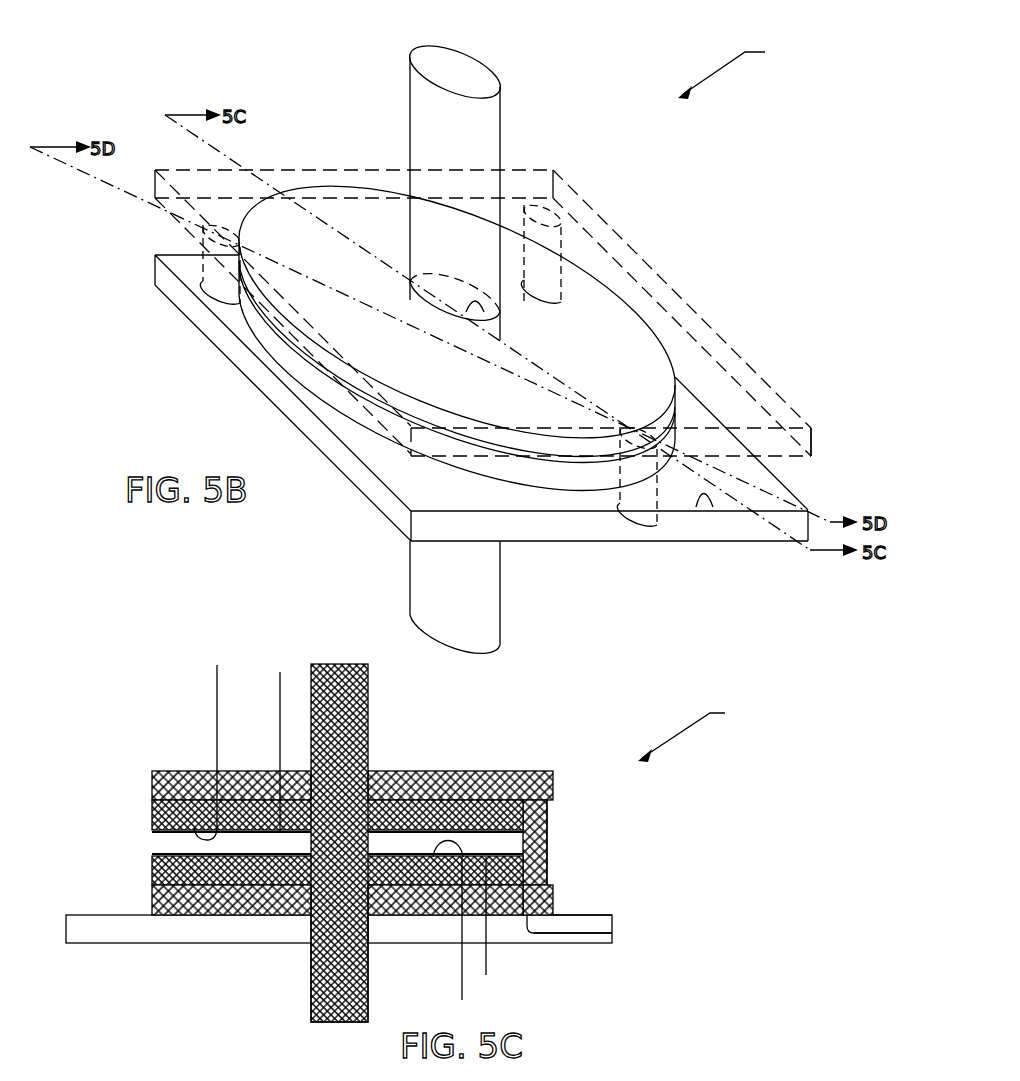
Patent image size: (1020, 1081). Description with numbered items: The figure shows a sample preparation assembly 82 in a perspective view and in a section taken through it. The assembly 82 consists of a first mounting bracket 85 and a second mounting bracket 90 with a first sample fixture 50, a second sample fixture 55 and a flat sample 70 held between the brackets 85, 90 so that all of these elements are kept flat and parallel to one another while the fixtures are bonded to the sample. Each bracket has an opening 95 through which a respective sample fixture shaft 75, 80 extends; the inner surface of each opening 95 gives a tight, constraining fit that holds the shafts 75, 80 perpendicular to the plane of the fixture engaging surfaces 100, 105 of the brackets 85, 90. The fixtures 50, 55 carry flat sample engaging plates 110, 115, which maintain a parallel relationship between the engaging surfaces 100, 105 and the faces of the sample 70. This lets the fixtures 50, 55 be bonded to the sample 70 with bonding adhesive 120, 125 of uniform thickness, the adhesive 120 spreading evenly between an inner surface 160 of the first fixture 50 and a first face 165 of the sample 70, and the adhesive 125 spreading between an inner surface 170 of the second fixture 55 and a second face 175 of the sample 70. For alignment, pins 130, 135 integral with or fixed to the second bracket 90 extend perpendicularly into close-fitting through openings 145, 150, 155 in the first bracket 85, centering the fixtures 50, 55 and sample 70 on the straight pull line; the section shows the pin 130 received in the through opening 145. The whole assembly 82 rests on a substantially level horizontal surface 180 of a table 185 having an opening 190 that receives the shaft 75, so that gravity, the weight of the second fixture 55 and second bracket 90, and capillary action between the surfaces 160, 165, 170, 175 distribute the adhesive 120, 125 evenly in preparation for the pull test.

In FIG. 5C, the first sample fixture 50 is at (167, 873).
In FIG. 5C, the second sample fixture 55 is at (155, 800).
In FIG. 5B, the sample 70 is at (200, 262).
In FIG. 5C, the sample 70 is at (172, 842).
In FIG. 5B, the sample fixture shaft 75 is at (440, 578).
In FIG. 5C, the sample fixture shaft 75 is at (338, 997).
In FIG. 5B, the sample fixture shaft 80 is at (467, 119).
In FIG. 5C, the sample fixture shaft 80 is at (337, 705).
In FIG. 5B, the sample preparation assembly 82 is at (736, 69).
In FIG. 5C, the sample preparation assembly 82 is at (694, 732).
In FIG. 5B, the first mounting bracket 85 is at (560, 533).
In FIG. 5C, the first mounting bracket 85 is at (510, 907).
In FIG. 5B, the second mounting bracket 90 is at (813, 436).
In FIG. 5C, the second mounting bracket 90 is at (520, 778).
In FIG. 5C, the opening 95 is at (370, 775).
In FIG. 5B, the fixture engaging surface 100 is at (708, 505).
In FIG. 5B, the fixture engaging surface 105 is at (803, 460).
In FIG. 5B, the sample engaging plate 110 is at (352, 420).
In FIG. 5B, the sample engaging plate 115 is at (300, 355).
In FIG. 5C, the bonding adhesive 120 is at (167, 856).
In FIG. 5C, the bonding adhesive 125 is at (160, 828).
In FIG. 5C, the pin 130 is at (548, 867).
In FIG. 5B, the pin 135 is at (561, 230).
In FIG. 5B, the through opening 145 is at (643, 527).
In FIG. 5C, the through opening 145 is at (613, 933).
In FIG. 5B, the through opening 150 is at (561, 297).
In FIG. 5B, the through opening 155 is at (210, 300).
In FIG. 5C, the inner surface 160 is at (462, 1000).
In FIG. 5C, the first face 165 is at (486, 975).
In FIG. 5C, the inner surface 170 is at (217, 665).
In FIG. 5C, the second face 175 is at (280, 672).
In FIG. 5C, the horizontal surface 180 is at (592, 915).
In FIG. 5C, the table 185 is at (607, 927).
In FIG. 5C, the opening 190 is at (372, 928).